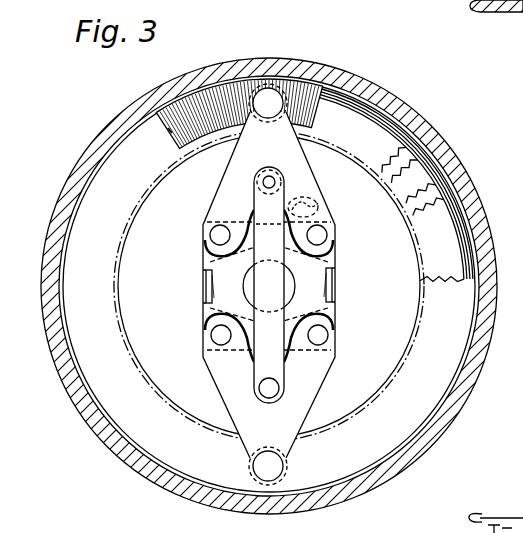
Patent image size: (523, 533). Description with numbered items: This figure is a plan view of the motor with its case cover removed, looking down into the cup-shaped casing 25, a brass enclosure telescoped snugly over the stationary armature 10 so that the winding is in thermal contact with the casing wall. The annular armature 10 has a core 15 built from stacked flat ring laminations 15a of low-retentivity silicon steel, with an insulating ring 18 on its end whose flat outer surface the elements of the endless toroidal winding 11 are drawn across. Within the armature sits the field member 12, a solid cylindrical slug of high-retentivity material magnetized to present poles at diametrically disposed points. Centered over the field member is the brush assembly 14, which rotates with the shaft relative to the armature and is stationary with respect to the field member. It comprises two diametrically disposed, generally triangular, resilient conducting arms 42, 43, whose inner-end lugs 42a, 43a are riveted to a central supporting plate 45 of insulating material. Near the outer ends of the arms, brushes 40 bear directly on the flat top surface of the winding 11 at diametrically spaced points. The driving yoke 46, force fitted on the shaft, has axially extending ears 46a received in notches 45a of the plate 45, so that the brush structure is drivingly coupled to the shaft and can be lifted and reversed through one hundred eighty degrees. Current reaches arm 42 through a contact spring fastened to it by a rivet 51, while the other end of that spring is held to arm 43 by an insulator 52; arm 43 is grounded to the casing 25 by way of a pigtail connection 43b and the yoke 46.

The armature 10 is at (178, 101).
The toroidal winding 11 is at (166, 132).
The field member 12 is at (120, 319).
The brush assembly 14 is at (206, 197).
The core 15 is at (364, 114).
The ring laminations 15a is at (447, 150).
The insulating ring 18 is at (387, 128).
The casing 25 is at (61, 197).
The brushes 40 is at (269, 82).
The brush arm 42 is at (311, 407).
The lug 42a is at (210, 338).
The brush arm 43 is at (318, 187).
The lug 43a is at (209, 235).
The pigtail connection 43b is at (322, 208).
The supporting plate 45 is at (334, 313).
The notches 45a is at (205, 272).
The driving yoke 46 is at (333, 263).
The ears 46a is at (206, 294).
The rivet 51 is at (263, 399).
The insulator 52 is at (271, 176).